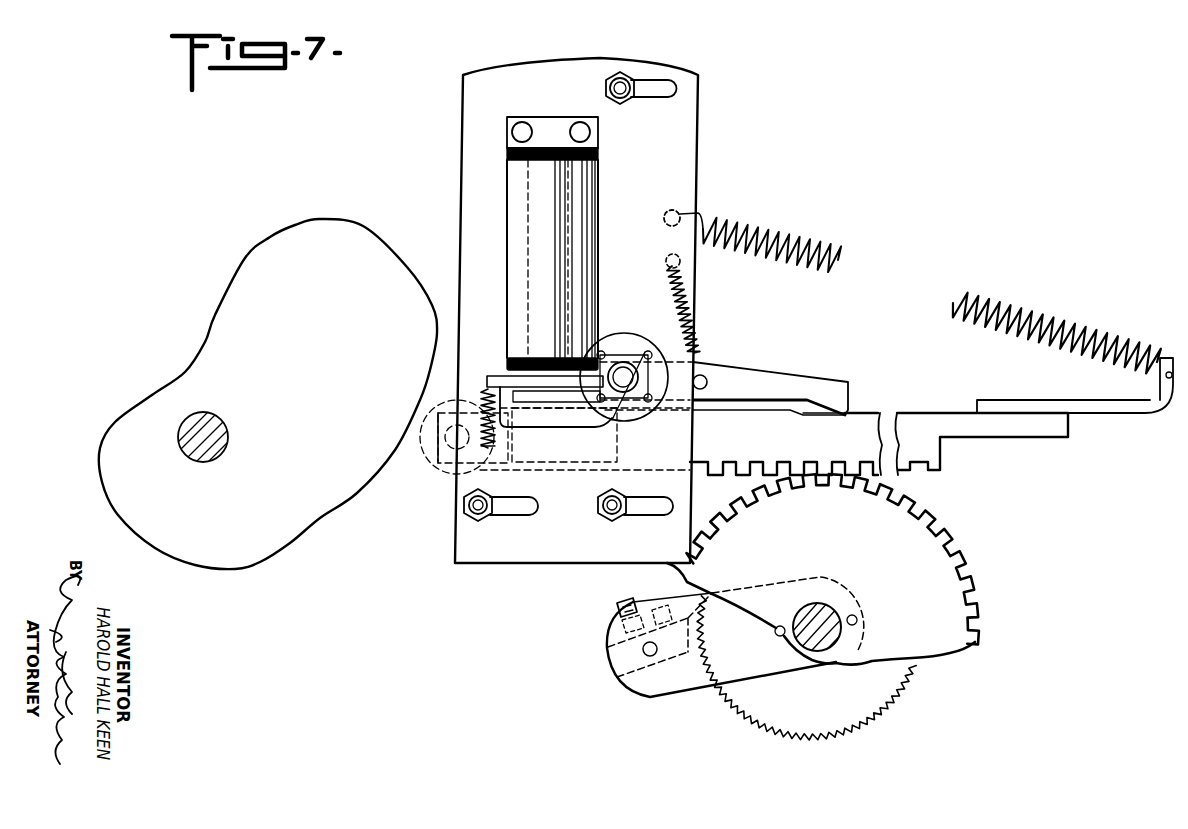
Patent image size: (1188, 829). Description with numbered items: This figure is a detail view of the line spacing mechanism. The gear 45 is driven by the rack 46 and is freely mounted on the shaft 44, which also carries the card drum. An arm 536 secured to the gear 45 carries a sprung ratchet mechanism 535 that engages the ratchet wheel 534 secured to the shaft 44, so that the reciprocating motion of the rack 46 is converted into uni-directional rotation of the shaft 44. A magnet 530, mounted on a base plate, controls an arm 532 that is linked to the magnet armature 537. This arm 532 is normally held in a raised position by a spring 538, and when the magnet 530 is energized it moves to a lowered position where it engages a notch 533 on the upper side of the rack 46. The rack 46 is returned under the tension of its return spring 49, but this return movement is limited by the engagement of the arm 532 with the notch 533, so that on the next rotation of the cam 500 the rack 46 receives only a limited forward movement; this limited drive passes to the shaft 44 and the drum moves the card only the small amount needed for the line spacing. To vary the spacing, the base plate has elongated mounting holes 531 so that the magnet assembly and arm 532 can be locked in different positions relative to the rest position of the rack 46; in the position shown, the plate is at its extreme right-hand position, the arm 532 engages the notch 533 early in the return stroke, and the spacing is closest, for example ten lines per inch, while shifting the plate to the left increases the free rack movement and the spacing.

The cam 500 is at (258, 262).
The magnet 530 is at (598, 193).
The elongated mounting holes 531 is at (532, 510).
The arm 532 is at (800, 382).
The notch 533 is at (820, 418).
The ratchet wheel 534 is at (797, 722).
The sprung ratchet mechanism 535 is at (678, 607).
The arm 536 is at (672, 683).
The magnet armature 537 is at (500, 378).
The spring 538 is at (703, 347).
The shaft 44 is at (838, 620).
The gear 45 is at (962, 603).
The rack 46 is at (930, 445).
The return spring 49 is at (1018, 312).